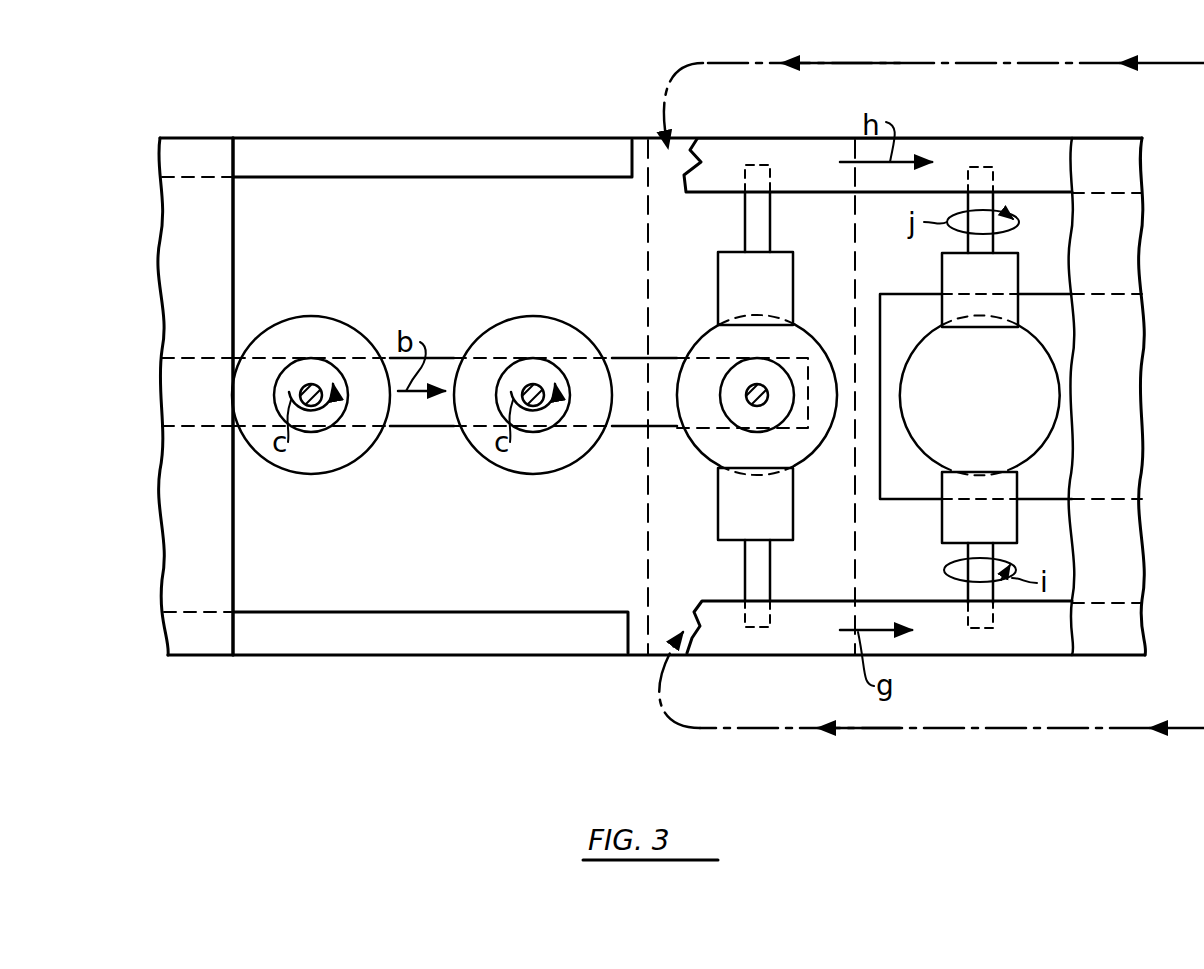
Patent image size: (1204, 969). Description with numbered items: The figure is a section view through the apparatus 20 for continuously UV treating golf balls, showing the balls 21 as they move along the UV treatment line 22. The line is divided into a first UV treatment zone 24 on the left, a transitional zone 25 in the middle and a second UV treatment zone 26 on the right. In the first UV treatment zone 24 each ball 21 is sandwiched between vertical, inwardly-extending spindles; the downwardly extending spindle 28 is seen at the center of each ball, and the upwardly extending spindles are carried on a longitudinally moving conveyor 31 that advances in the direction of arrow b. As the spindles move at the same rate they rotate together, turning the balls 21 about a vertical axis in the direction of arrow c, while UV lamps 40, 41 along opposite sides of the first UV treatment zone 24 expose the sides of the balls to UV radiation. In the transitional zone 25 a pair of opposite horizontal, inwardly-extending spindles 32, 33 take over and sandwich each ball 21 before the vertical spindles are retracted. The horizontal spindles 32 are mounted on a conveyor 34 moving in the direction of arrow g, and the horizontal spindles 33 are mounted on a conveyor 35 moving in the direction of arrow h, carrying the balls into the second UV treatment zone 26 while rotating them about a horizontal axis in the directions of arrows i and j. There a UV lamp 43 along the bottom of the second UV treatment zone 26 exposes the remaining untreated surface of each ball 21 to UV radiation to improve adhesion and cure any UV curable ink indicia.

The apparatus 20 is at (243, 88).
The ball 21 is at (286, 324).
The UV treatment line 22 is at (298, 657).
The first UV treatment zone 24 is at (469, 559).
The transitional zone 25 is at (698, 576).
The second UV treatment zone 26 is at (905, 588).
The downwardly extending spindle 28 is at (306, 358).
The conveyor 31 is at (406, 428).
The horizontal spindle 32 is at (793, 513).
The horizontal spindle 33 is at (718, 262).
The conveyor 34 is at (960, 626).
The conveyor 35 is at (1020, 150).
The UV lamp 40 is at (444, 648).
The UV lamp 41 is at (412, 145).
The UV lamp 43 is at (921, 490).